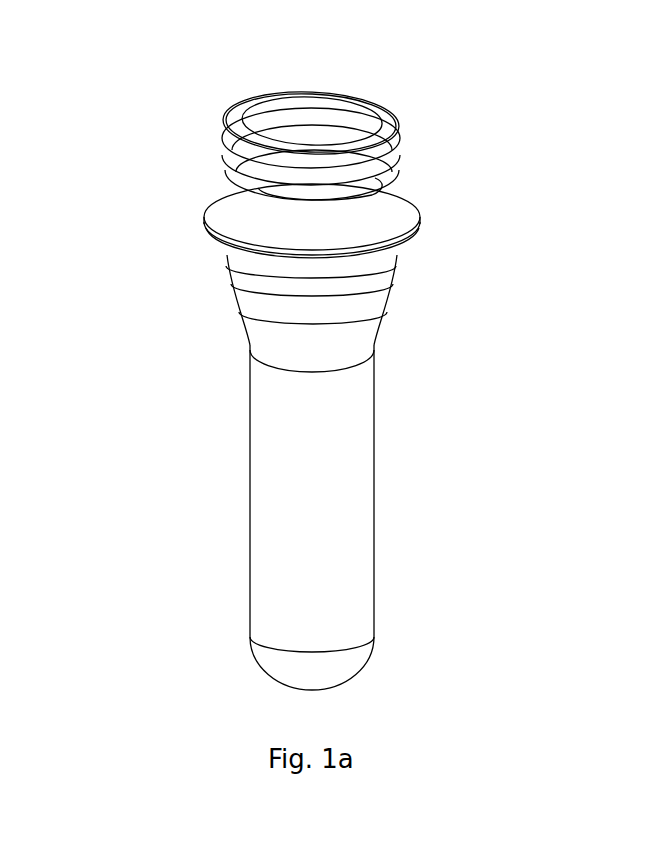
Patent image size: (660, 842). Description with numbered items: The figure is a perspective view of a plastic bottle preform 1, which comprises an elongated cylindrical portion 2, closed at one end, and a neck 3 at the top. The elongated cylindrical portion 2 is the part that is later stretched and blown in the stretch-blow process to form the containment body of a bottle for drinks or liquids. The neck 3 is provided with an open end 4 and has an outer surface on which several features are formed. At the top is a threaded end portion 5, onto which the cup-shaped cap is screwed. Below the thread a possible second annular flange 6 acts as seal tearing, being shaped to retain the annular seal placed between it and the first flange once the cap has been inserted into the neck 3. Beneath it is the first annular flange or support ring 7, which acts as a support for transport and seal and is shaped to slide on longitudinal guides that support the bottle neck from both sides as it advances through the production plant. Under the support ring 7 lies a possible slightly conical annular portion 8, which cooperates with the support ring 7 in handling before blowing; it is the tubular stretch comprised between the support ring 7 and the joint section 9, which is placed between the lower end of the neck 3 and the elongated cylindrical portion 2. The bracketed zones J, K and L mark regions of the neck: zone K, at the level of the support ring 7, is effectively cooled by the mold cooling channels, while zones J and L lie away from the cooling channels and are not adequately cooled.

The bottle preform 1 is at (186, 117).
The elongated cylindrical portion 2 is at (388, 495).
The neck 3 is at (382, 357).
The open end 4 is at (345, 92).
The threaded end portion 5 is at (207, 158).
The second annular flange 6 is at (228, 187).
The first annular flange or support ring 7 is at (228, 230).
The conical annular portion 8 is at (226, 310).
The joint section 9 is at (281, 368).
The zone J is at (418, 164).
The zone K is at (433, 212).
The zone L is at (401, 279).